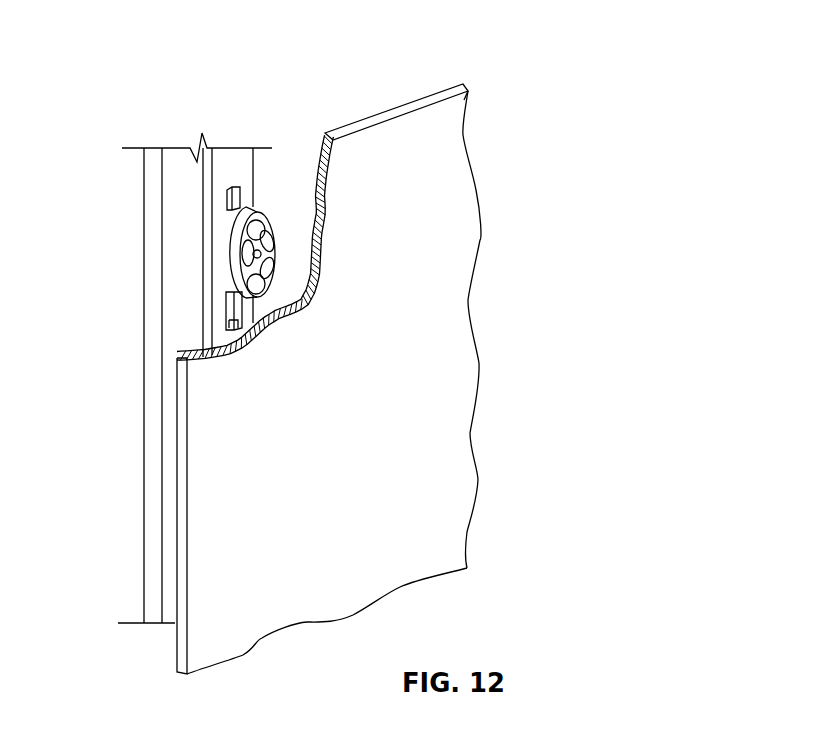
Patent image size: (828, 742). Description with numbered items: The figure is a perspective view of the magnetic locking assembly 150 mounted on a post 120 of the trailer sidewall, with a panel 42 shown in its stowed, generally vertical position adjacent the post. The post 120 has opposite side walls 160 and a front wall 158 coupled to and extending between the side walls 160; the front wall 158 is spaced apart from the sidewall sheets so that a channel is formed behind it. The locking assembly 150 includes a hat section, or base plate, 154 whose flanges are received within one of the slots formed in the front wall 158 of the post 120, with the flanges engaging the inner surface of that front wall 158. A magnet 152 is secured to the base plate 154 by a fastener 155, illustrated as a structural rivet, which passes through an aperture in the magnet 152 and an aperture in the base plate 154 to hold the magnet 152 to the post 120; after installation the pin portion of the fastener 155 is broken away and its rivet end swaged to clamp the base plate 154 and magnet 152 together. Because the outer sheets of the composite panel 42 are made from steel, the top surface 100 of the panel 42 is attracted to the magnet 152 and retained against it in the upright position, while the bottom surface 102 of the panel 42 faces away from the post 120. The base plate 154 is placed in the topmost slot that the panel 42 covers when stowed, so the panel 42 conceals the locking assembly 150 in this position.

The top surface 100 is at (277, 352).
The bottom surface 102 is at (361, 412).
The panel 42 is at (482, 141).
The post 120 is at (158, 104).
The locking assembly 150 is at (194, 212).
The magnet 152 is at (233, 187).
The base plate 154 is at (236, 332).
The fastener 155 is at (223, 255).
The front wall 158 is at (237, 160).
The side walls 160 is at (182, 213).